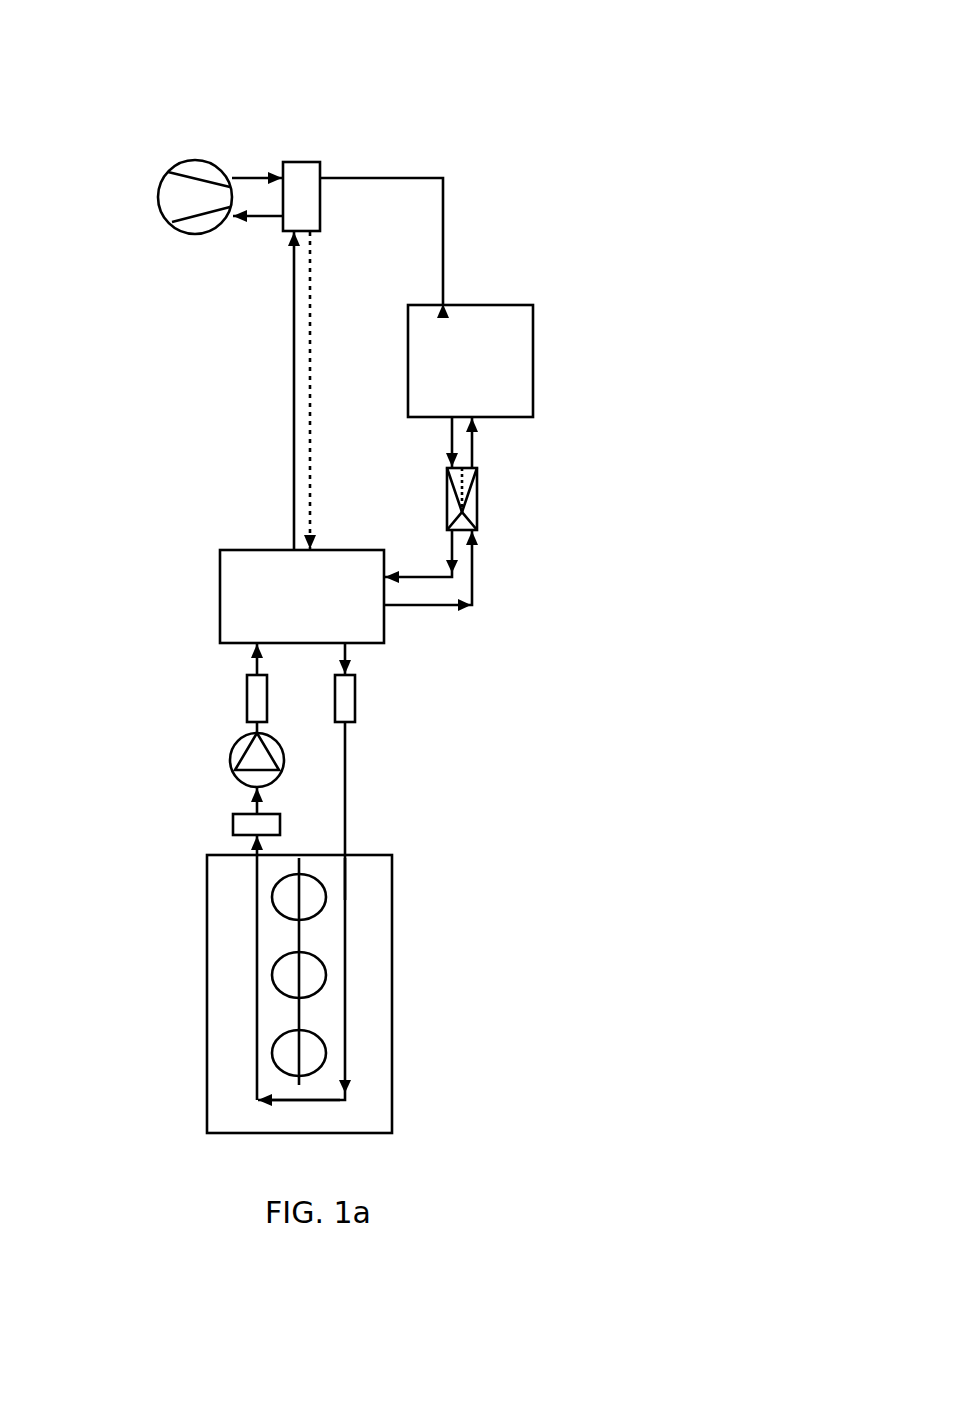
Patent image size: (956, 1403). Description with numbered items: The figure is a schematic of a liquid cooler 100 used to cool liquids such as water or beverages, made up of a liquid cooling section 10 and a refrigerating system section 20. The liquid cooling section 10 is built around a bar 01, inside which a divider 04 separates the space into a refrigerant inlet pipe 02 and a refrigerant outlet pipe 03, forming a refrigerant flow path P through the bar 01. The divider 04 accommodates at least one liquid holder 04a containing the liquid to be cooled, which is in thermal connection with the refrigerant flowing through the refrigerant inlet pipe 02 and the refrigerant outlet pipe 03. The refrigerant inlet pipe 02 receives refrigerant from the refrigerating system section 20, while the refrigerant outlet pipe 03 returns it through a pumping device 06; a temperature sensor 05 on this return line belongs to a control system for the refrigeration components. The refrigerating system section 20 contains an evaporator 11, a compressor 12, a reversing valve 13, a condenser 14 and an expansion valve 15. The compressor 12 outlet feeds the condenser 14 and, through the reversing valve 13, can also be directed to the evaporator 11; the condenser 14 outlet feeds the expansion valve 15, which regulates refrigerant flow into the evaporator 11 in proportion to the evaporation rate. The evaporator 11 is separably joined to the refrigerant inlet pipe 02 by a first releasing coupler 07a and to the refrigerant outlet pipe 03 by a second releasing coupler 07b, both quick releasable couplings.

The liquid cooler 100 is at (568, 107).
The refrigerating system section 20 is at (563, 274).
The liquid cooling section 10 is at (494, 784).
The compressor 12 is at (195, 236).
The reversing valve 13 is at (321, 236).
The condenser 14 is at (470, 361).
The expansion valve 15 is at (440, 490).
The evaporator 11 is at (302, 596).
The first releasing coupler 07a is at (356, 700).
The second releasing coupler 07b is at (246, 700).
The pumping device 06 is at (229, 760).
The temperature sensor 05 is at (232, 824).
The bar 01 is at (394, 992).
The refrigerant inlet pipe 02 is at (352, 880).
The refrigerant outlet pipe 03 is at (236, 967).
The divider 04 is at (303, 937).
The liquid holder 04a is at (328, 1053).
The flow path P is at (319, 1108).